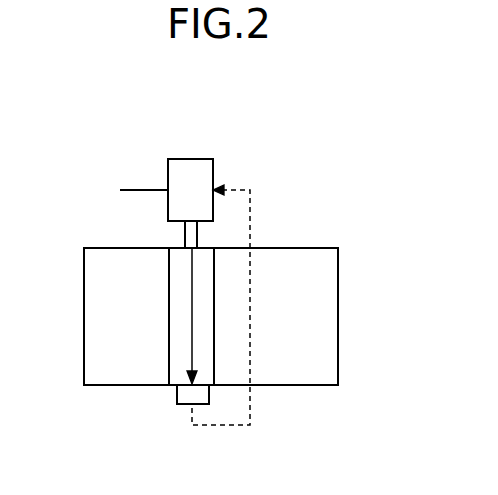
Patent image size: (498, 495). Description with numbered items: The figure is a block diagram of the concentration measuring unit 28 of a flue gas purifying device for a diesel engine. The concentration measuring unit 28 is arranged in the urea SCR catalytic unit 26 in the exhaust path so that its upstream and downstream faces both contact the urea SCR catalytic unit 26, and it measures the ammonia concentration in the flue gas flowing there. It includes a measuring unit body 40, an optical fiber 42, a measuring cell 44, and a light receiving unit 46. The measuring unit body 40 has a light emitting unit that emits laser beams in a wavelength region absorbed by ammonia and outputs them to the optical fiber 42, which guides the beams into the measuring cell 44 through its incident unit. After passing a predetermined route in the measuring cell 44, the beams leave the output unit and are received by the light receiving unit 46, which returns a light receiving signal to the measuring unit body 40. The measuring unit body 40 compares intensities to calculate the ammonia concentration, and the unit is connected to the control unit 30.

The concentration measuring unit 28 is at (283, 141).
The measuring unit body 40 is at (190, 158).
The control unit 30 is at (125, 180).
The optical fiber 42 is at (198, 236).
The urea SCR catalytic unit 26 is at (118, 386).
The measuring cell 44 is at (168, 277).
The light receiving unit 46 is at (183, 406).